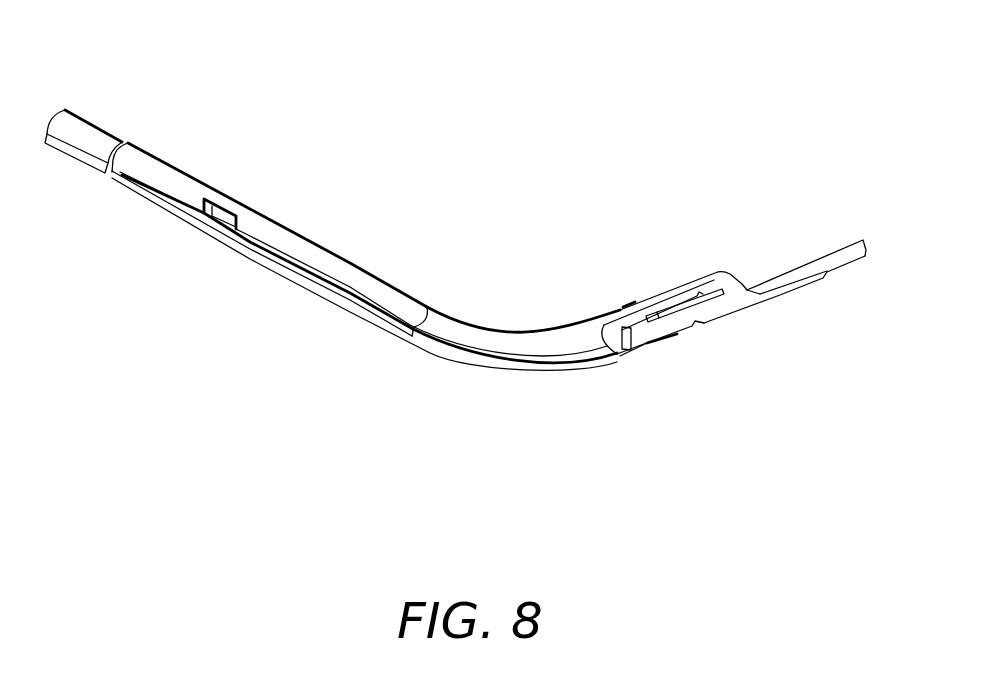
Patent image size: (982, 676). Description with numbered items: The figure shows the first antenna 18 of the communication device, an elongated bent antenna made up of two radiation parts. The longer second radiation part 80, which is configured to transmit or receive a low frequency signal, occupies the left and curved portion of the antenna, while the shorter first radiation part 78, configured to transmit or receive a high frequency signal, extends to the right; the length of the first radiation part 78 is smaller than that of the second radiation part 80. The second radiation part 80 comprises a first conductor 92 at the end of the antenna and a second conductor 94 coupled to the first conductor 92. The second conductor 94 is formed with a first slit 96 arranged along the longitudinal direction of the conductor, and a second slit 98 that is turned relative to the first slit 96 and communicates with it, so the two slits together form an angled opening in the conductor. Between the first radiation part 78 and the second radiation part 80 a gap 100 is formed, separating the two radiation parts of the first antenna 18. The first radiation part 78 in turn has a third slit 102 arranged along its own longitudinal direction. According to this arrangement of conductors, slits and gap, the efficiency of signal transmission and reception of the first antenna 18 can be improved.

The first antenna 18 is at (557, 406).
The first radiation part 78 is at (797, 302).
The second radiation part 80 is at (306, 291).
The first conductor 92 is at (67, 120).
The second conductor 94 is at (163, 178).
The first slit 96 is at (230, 229).
The second slit 98 is at (231, 211).
The gap 100 is at (627, 350).
The third slit 102 is at (697, 302).